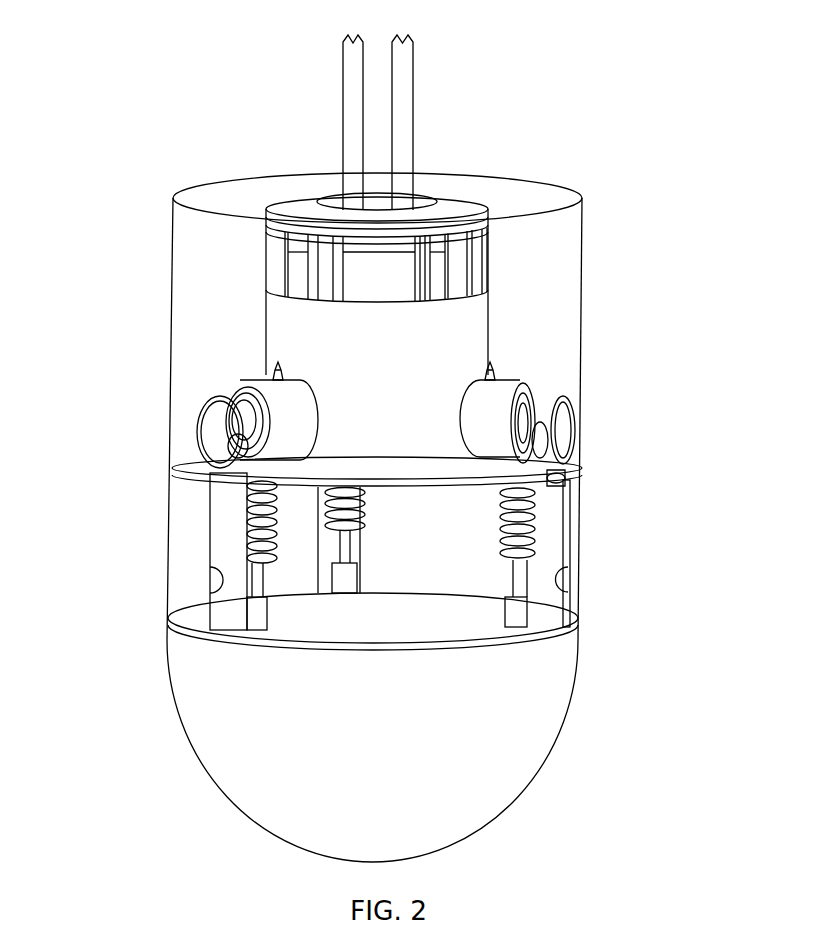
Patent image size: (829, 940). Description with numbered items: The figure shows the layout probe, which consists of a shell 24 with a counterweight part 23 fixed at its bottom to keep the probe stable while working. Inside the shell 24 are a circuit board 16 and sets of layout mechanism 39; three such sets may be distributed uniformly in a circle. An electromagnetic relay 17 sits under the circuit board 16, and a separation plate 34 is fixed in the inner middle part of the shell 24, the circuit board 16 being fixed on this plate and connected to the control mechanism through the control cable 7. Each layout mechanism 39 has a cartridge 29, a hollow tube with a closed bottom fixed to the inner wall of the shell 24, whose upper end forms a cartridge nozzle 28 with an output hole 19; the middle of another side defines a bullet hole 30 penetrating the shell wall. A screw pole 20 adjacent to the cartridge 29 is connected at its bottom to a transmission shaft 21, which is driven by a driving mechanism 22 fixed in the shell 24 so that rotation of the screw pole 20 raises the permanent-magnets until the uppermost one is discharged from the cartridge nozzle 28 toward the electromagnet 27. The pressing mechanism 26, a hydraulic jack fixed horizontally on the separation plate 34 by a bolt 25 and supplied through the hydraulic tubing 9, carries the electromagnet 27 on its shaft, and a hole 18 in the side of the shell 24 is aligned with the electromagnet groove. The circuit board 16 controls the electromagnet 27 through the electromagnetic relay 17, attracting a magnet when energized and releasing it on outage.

The control cable 7 is at (343, 138).
The hydraulic tubing 9 is at (415, 100).
The circuit board 16 is at (330, 244).
The electromagnetic relay 17 is at (373, 279).
The hole 18 is at (200, 417).
The output hole 19 is at (195, 462).
The screw pole 20 is at (248, 527).
The transmission shaft 21 is at (247, 577).
The driving mechanism 22 is at (253, 603).
The counterweight part 23 is at (183, 738).
The shell 24 is at (582, 235).
The bolt 25 is at (490, 370).
The pressing mechanism 26 is at (533, 393).
The electromagnet 27 is at (553, 438).
The cartridge nozzle 28 is at (565, 477).
The cartridge 29 is at (567, 520).
The bullet hole 30 is at (573, 580).
The separation plate 34 is at (425, 480).
The layout mechanism 39 is at (523, 377).